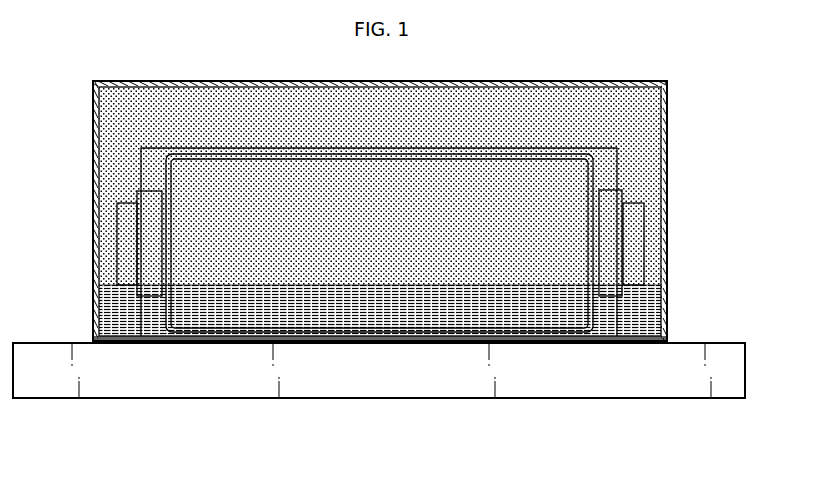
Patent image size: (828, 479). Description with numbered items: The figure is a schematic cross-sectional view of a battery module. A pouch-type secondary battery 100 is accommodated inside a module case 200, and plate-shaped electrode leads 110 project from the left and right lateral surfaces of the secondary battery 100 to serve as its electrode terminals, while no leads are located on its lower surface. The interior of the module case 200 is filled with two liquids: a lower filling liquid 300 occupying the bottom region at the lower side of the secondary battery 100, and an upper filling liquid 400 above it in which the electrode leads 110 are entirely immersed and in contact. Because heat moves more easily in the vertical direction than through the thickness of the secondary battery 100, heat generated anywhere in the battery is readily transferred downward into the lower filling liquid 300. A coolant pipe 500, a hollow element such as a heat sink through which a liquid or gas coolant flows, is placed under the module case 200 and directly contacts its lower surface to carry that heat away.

The secondary battery 100 is at (570, 167).
The electrode lead 110 is at (115, 222).
The module case 200 is at (659, 118).
The lower filling liquid 300 is at (115, 305).
The upper filling liquid 400 is at (115, 115).
The coolant pipe 500 is at (572, 390).